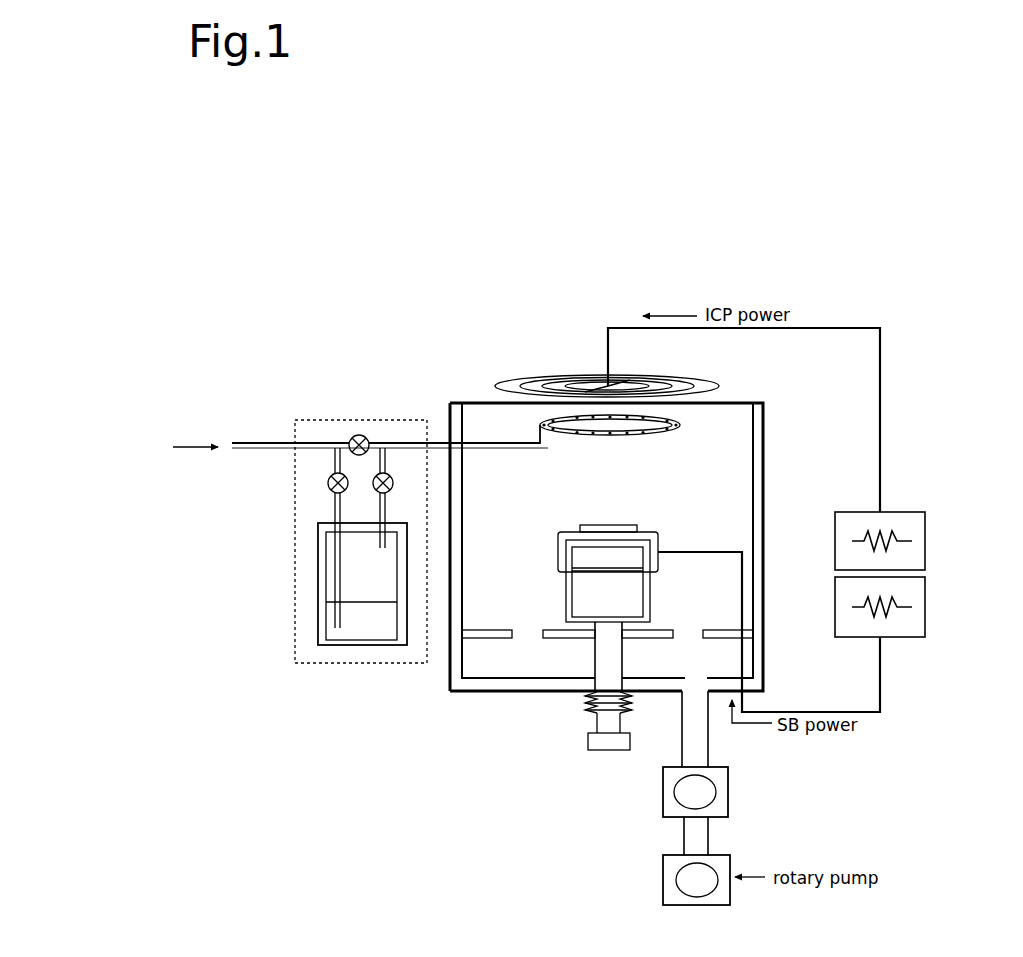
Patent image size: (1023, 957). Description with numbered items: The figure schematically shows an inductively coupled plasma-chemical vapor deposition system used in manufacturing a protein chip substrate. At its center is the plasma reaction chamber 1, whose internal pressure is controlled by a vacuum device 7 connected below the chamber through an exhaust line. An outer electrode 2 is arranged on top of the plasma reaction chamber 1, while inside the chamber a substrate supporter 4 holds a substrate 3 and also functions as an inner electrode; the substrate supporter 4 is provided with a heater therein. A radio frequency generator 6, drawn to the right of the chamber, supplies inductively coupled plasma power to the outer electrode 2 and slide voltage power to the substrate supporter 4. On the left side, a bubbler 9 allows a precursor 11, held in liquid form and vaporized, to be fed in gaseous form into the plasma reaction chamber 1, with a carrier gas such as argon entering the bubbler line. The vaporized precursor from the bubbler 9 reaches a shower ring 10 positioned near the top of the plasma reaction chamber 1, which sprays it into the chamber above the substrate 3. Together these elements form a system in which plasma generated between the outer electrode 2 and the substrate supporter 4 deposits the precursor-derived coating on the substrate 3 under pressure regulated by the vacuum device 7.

The plasma reaction chamber 1 is at (467, 400).
The outer electrode 2 is at (680, 373).
The substrate 3 is at (578, 528).
The substrate supporter 4 is at (653, 530).
The radio frequency generator 6 is at (926, 590).
The vacuum device 7 is at (734, 788).
The bubbler 9 is at (315, 568).
The shower ring 10 is at (613, 440).
The precursor 11 is at (360, 617).